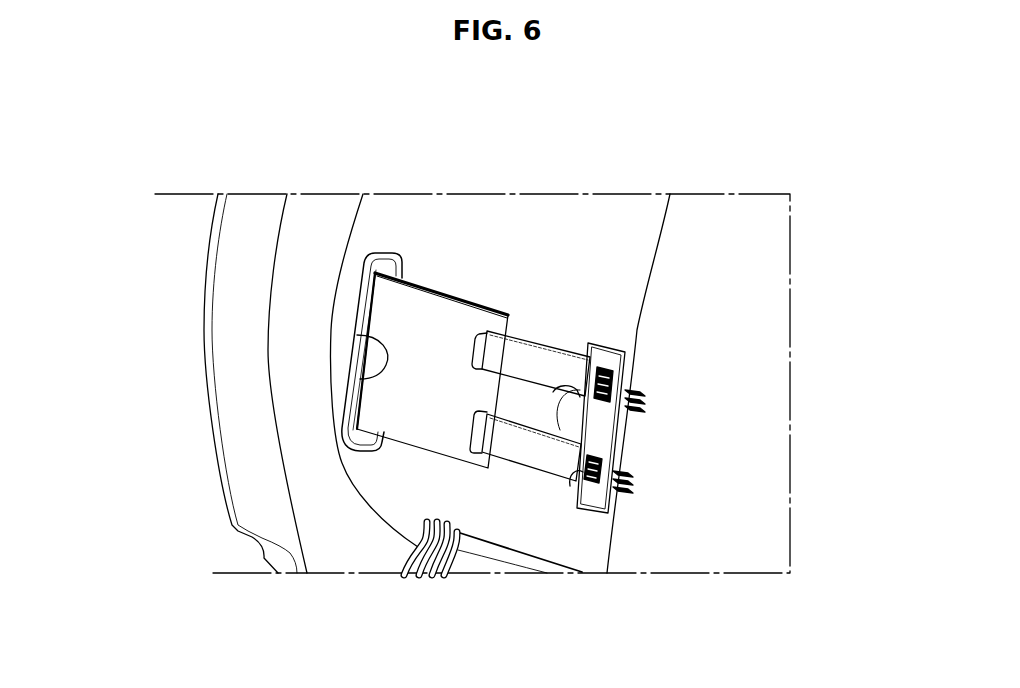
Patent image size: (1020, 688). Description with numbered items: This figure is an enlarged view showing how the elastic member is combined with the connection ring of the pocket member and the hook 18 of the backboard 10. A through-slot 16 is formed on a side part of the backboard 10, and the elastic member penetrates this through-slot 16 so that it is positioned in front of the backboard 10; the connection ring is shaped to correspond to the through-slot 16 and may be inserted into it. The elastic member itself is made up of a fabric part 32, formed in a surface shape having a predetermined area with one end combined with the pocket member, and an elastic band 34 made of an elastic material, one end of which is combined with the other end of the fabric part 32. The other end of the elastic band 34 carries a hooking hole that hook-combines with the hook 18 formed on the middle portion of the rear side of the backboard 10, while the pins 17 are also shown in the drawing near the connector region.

The backboard 10 is at (613, 225).
The through-slot 16 is at (358, 386).
The terminal pins 17 is at (646, 405).
The hook 18 is at (555, 400).
The fabric part 32 is at (420, 317).
The elastic band 34 is at (545, 455).